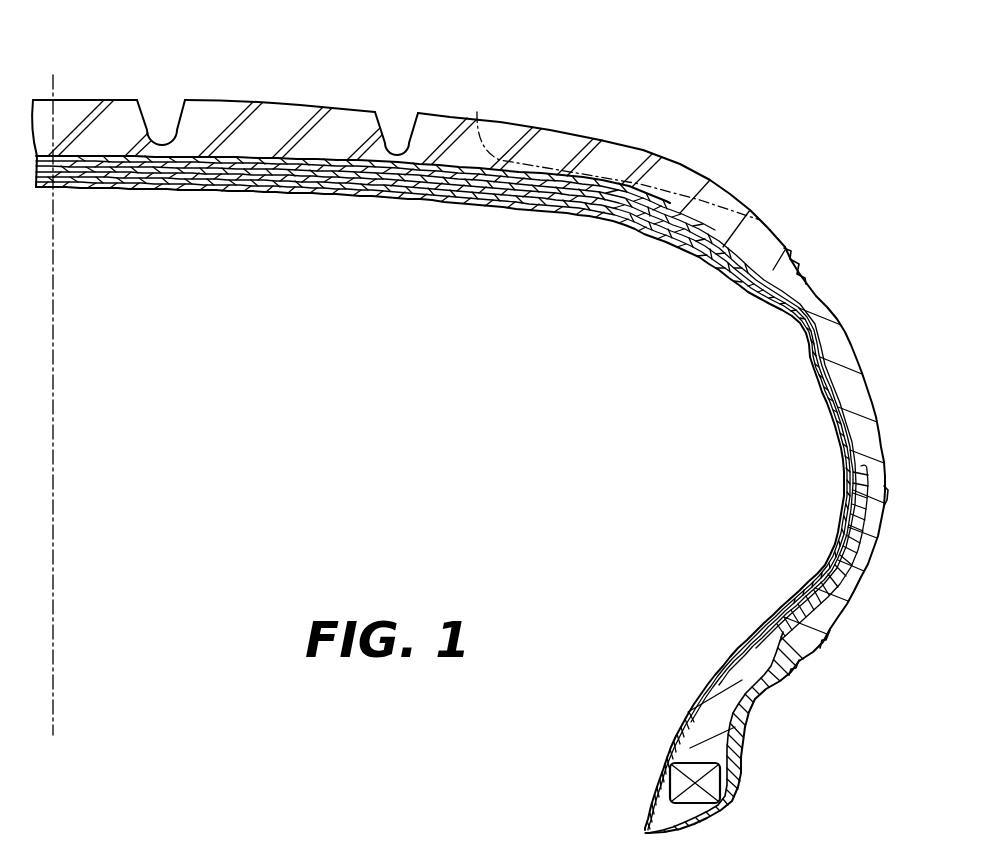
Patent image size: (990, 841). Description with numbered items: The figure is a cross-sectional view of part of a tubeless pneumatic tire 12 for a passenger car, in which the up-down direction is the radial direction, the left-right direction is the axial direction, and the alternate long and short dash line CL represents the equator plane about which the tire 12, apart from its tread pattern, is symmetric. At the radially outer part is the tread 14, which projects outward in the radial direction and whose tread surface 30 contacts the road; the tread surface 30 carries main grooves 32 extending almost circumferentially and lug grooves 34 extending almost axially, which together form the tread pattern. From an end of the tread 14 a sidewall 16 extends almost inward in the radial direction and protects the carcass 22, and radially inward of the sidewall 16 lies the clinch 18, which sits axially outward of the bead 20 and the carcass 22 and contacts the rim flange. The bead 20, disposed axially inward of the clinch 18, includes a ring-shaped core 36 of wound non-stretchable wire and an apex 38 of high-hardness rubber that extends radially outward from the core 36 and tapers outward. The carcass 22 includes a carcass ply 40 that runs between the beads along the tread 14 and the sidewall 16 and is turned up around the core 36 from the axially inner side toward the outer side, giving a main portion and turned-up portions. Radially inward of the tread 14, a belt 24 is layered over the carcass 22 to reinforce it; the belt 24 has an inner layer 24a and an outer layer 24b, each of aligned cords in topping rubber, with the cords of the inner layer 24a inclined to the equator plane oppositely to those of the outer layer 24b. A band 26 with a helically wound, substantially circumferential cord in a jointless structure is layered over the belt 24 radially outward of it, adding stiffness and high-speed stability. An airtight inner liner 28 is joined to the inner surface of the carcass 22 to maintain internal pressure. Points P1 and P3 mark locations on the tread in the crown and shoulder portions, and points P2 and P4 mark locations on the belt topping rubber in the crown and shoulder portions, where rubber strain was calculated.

The pneumatic tire 12 is at (829, 100).
The tread 14 is at (280, 110).
The sidewall 16 is at (867, 397).
The clinch 18 is at (745, 740).
The bead 20 is at (707, 695).
The carcass 22 is at (822, 368).
The belt 24 is at (248, 268).
The inner layer 24a is at (273, 177).
The outer layer 24b is at (338, 170).
The band 26 is at (322, 160).
The inner liner 28 is at (452, 197).
The tread surface 30 is at (222, 100).
The main groove 32 is at (182, 120).
The lug groove 34 is at (477, 112).
The core 36 is at (717, 783).
The apex 38 is at (687, 737).
The carcass ply 40 is at (791, 443).
The point P1 is at (78, 110).
The point P2 is at (75, 168).
The point P3 is at (615, 150).
The point P4 is at (545, 190).
The equator plane line CL is at (53, 503).